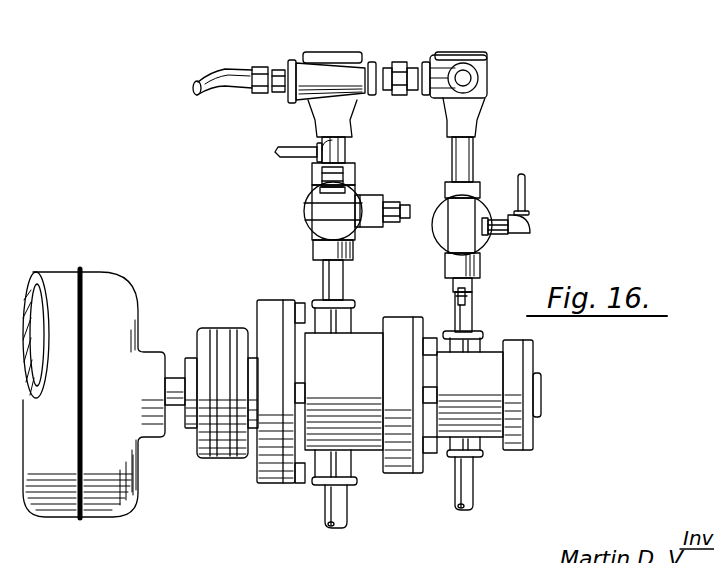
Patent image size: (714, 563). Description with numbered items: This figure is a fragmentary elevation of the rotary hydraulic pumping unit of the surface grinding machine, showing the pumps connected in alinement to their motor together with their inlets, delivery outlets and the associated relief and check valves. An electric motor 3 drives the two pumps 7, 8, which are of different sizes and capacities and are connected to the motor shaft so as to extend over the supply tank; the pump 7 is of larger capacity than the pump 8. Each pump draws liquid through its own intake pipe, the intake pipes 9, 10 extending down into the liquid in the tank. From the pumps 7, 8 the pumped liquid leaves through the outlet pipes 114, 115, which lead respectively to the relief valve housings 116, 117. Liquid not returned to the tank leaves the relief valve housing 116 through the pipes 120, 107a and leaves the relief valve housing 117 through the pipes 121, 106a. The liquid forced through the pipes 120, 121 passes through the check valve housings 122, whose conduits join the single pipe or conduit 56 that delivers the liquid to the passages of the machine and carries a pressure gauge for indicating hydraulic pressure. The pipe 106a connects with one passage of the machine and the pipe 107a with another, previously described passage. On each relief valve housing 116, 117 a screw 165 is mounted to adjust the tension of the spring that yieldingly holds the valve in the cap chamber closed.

The electric motor 3 is at (50, 283).
The pump 7 is at (313, 420).
The pump 8 is at (483, 383).
The intake pipe 9 is at (330, 497).
The intake pipe 10 is at (460, 487).
The pipe or conduit 56 is at (230, 88).
The pipe 106a is at (525, 195).
The pipe 107a is at (280, 153).
The outlet pipe 114 is at (330, 277).
The outlet pipe 115 is at (473, 315).
The relief valve housing 116 is at (325, 210).
The relief valve housing 117 is at (462, 213).
The pipe 120 is at (348, 153).
The pipe 121 is at (470, 155).
The check valve housing 122 is at (440, 57).
The screw 165 is at (402, 227).